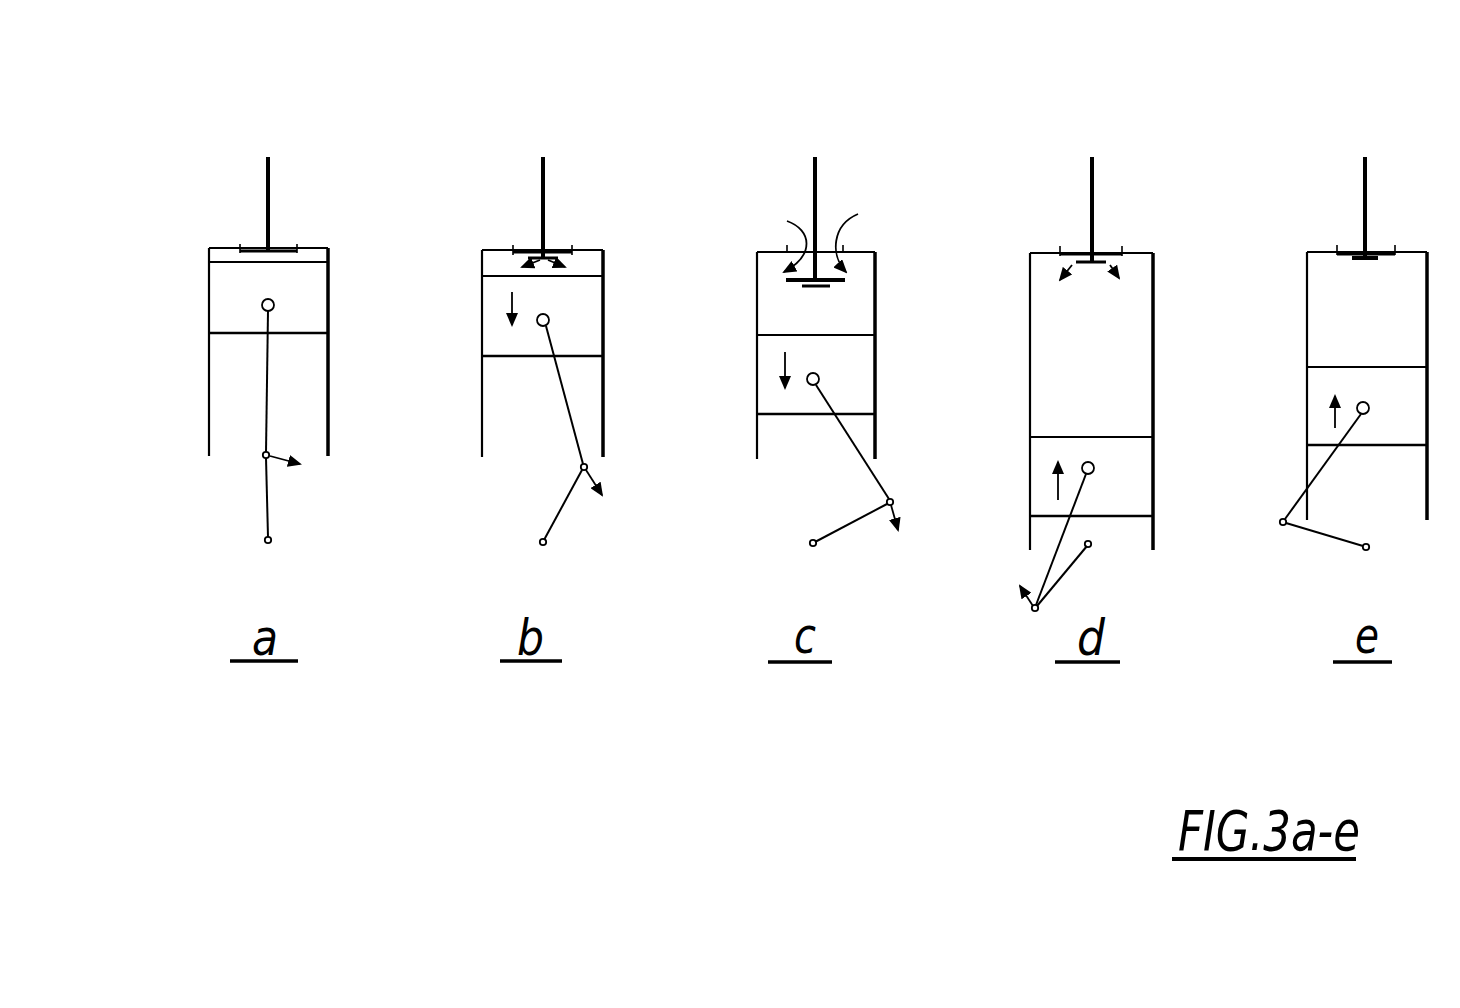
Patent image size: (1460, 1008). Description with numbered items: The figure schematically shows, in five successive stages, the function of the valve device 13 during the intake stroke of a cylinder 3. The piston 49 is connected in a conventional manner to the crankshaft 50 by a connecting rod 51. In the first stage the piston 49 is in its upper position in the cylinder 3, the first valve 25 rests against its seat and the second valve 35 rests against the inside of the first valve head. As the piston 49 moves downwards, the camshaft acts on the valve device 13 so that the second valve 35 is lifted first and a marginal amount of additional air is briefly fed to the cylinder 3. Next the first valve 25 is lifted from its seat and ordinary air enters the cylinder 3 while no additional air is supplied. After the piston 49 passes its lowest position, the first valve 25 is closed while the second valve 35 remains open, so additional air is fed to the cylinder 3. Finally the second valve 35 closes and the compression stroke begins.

In FIG. 3a, the cylinder 3 is at (222, 372).
In FIG. 3b, the cylinder 3 is at (510, 400).
In FIG. 3c, the cylinder 3 is at (775, 437).
In FIG. 3d, the cylinder 3 is at (1043, 345).
In FIG. 3e, the cylinder 3 is at (1320, 322).
In FIG. 3a, the valve device 13 is at (266, 207).
In FIG. 3b, the valve device 13 is at (543, 197).
In FIG. 3c, the valve device 13 is at (812, 195).
In FIG. 3d, the valve device 13 is at (1092, 212).
In FIG. 3e, the valve device 13 is at (1365, 205).
In FIG. 3c, the first valve 25 is at (785, 285).
In FIG. 3b, the second valve 35 is at (545, 262).
In FIG. 3c, the second valve 35 is at (812, 288).
In FIG. 3d, the second valve 35 is at (1089, 271).
In FIG. 3a, the piston 49 is at (222, 302).
In FIG. 3b, the piston 49 is at (492, 327).
In FIG. 3c, the piston 49 is at (770, 353).
In FIG. 3d, the piston 49 is at (1040, 460).
In FIG. 3e, the piston 49 is at (1318, 400).
In FIG. 3a, the crankshaft 50 is at (266, 512).
In FIG. 3b, the crankshaft 50 is at (571, 504).
In FIG. 3c, the crankshaft 50 is at (854, 522).
In FIG. 3d, the crankshaft 50 is at (1055, 576).
In FIG. 3e, the crankshaft 50 is at (1324, 534).
In FIG. 3a, the connecting rod 51 is at (266, 418).
In FIG. 3b, the connecting rod 51 is at (564, 395).
In FIG. 3c, the connecting rod 51 is at (852, 442).
In FIG. 3d, the connecting rod 51 is at (1061, 539).
In FIG. 3e, the connecting rod 51 is at (1323, 466).